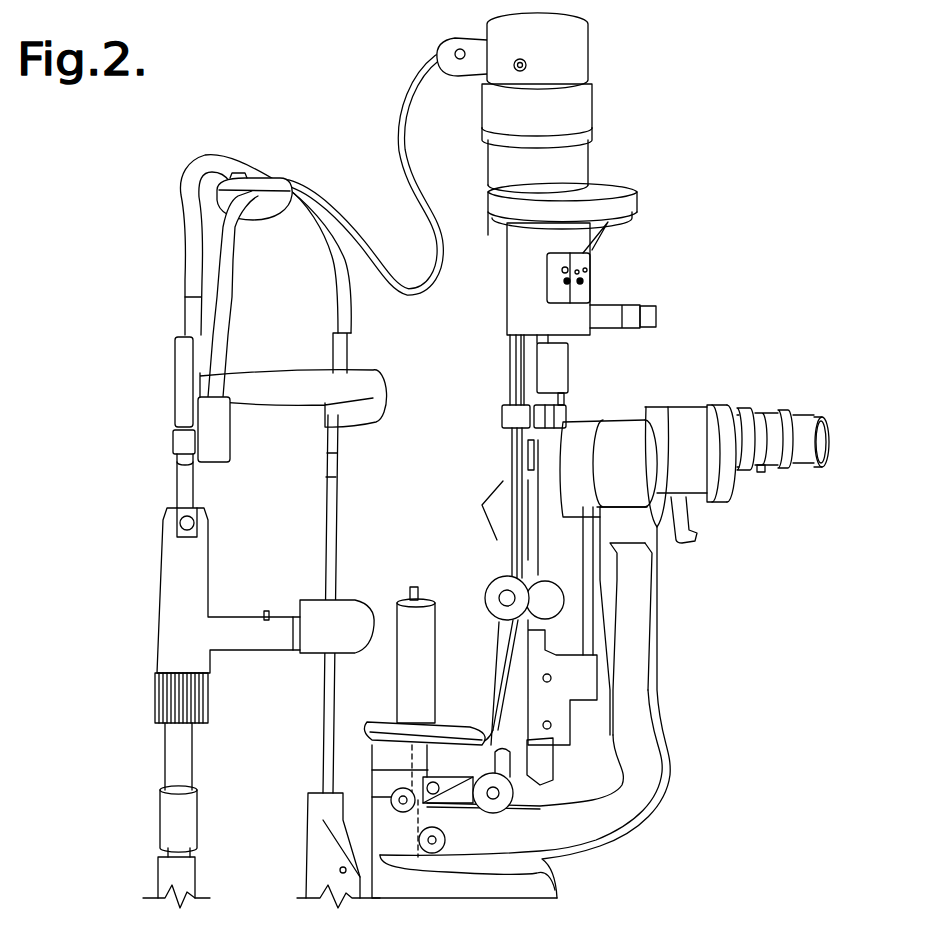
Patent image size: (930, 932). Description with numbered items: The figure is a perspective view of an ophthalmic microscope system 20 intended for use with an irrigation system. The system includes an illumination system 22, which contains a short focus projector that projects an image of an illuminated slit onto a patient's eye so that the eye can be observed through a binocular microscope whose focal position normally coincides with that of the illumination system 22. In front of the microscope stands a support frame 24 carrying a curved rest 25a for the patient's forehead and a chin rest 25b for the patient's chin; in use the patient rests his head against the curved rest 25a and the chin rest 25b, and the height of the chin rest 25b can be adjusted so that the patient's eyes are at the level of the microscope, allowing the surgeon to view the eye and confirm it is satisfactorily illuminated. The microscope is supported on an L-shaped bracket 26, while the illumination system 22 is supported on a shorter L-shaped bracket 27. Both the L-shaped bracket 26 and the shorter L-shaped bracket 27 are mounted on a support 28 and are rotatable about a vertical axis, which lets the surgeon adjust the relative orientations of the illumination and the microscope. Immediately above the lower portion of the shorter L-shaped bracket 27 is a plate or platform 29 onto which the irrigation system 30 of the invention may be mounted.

The ophthalmic microscope system 20 is at (672, 201).
The illumination system 22 is at (578, 160).
The support frame 24 is at (330, 528).
The curved rest 25a is at (380, 388).
The chin rest 25b is at (263, 637).
The L-shaped bracket 26 is at (643, 735).
The shorter L-shaped bracket 27 is at (498, 712).
The support 28 is at (547, 883).
The plate or platform 29 is at (365, 723).
The irrigation system 30 is at (428, 622).